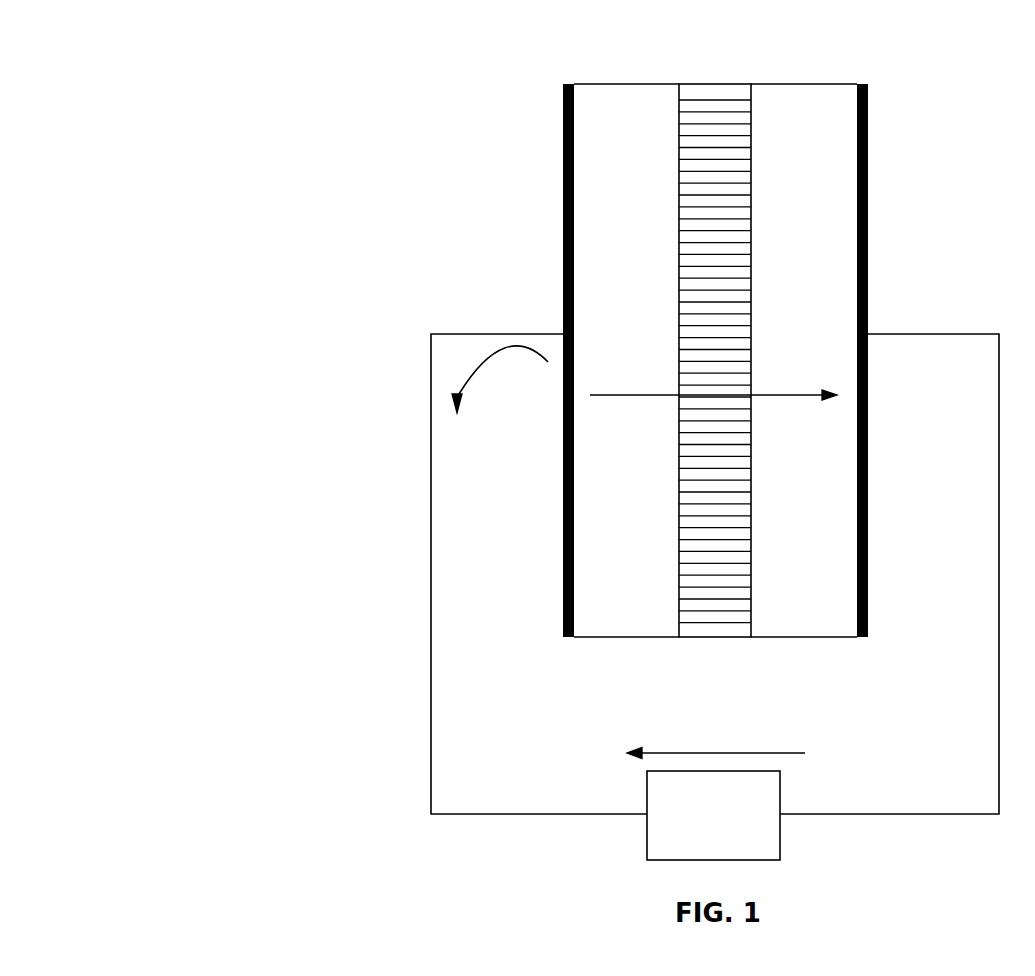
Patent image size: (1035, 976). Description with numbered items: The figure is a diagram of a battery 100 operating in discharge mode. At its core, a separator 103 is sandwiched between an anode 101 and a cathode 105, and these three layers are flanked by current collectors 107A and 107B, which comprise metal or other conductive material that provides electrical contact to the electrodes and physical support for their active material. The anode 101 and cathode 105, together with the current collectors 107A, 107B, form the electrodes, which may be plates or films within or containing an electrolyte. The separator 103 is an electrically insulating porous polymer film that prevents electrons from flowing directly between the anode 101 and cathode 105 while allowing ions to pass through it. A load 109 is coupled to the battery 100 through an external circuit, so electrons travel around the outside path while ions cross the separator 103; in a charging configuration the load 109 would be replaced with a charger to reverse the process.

The battery 100 is at (245, 174).
The anode 101 is at (607, 297).
The separator 103 is at (718, 84).
The cathode 105 is at (783, 297).
The current collector 107A is at (562, 103).
The current collector 107B is at (868, 108).
The load 109 is at (693, 841).